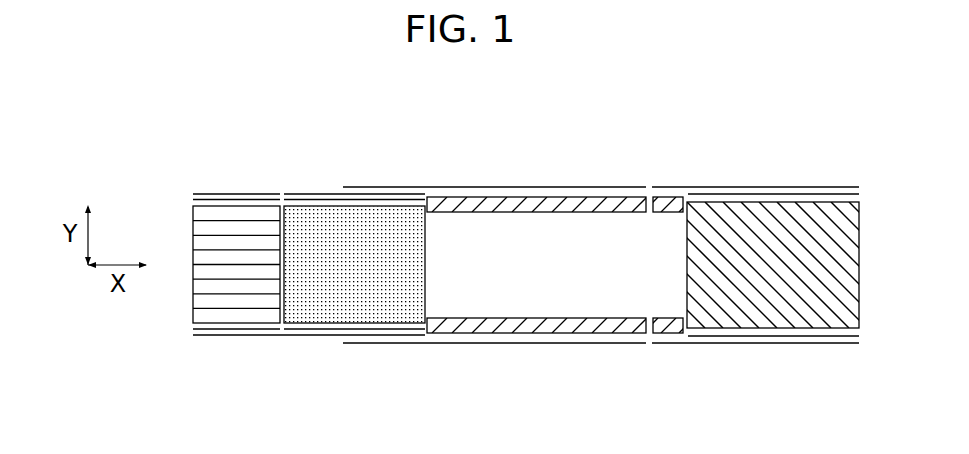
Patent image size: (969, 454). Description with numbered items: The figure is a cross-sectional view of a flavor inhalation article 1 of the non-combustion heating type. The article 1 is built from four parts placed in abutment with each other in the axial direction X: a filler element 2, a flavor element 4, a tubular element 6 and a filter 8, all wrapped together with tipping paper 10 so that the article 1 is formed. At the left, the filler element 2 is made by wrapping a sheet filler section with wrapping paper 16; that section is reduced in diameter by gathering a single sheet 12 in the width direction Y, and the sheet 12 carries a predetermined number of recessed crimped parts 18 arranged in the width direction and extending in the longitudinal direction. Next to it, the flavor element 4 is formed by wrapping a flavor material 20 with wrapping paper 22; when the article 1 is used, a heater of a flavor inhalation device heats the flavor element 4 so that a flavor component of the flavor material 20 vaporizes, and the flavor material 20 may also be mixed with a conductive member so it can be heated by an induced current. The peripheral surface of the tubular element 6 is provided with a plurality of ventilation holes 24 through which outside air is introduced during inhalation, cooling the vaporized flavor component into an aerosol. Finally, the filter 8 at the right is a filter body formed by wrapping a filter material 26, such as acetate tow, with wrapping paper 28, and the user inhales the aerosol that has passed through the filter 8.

The flavor inhalation article 1 is at (823, 150).
The filler element 2 is at (225, 200).
The flavor element 4 is at (327, 200).
The tubular element 6 is at (525, 196).
The filter 8 is at (770, 194).
The tipping paper 10 is at (587, 187).
The sheet 12 is at (228, 330).
The wrapping paper 16 is at (256, 198).
The recessed crimped parts 18 is at (248, 287).
The flavor material 20 is at (342, 302).
The wrapping paper 22 is at (297, 198).
The ventilation holes 24 is at (650, 190).
The filter material 26 is at (772, 287).
The wrapping paper 28 is at (717, 194).